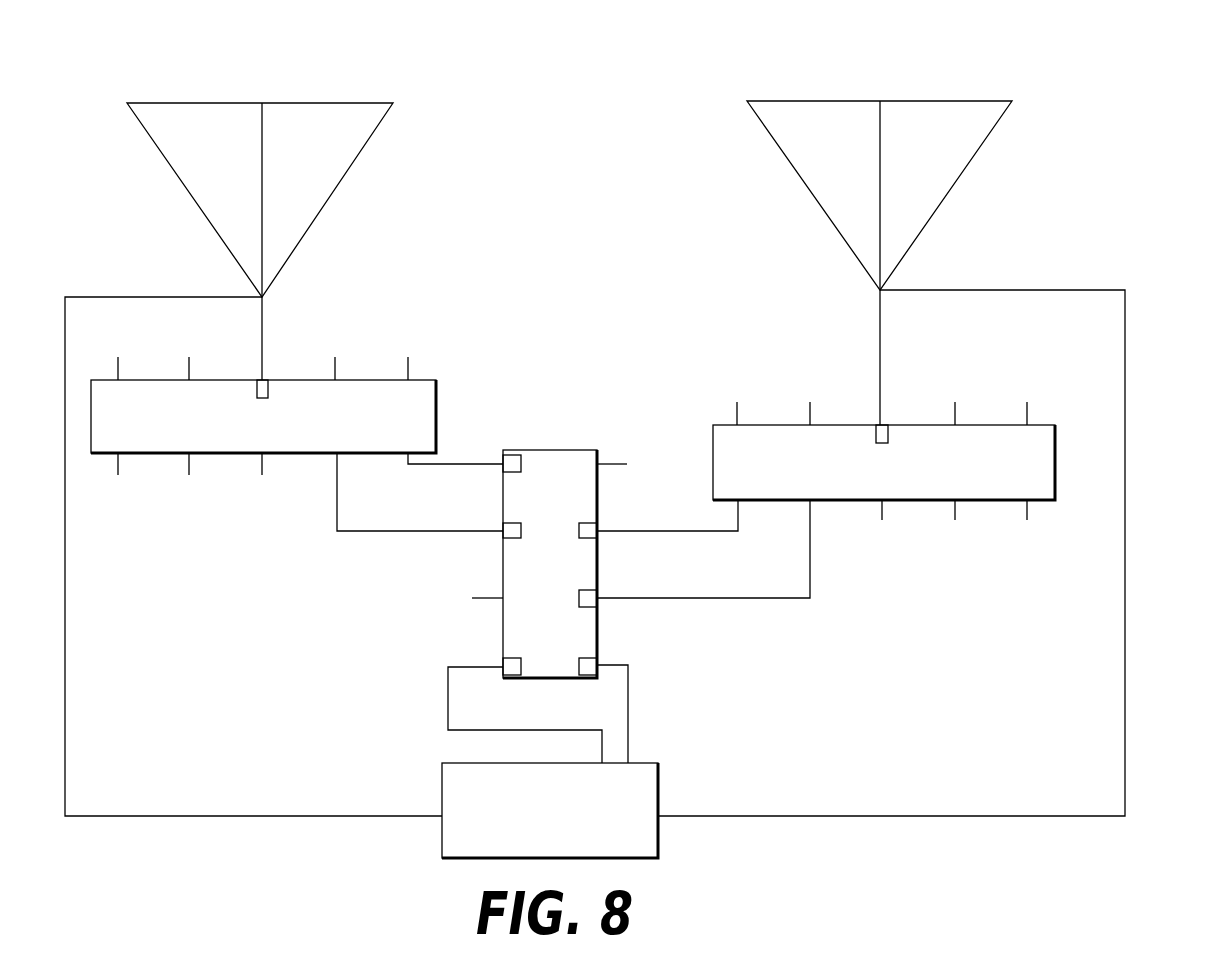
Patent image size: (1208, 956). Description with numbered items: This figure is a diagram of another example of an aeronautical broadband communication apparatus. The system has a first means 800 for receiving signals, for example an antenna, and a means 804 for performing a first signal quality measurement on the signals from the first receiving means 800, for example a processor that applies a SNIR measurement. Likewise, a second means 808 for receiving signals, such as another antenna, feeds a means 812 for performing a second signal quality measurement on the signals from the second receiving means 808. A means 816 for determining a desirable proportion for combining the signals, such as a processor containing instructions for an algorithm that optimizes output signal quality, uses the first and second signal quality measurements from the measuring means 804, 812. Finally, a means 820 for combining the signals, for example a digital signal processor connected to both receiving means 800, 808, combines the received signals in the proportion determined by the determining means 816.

The first means for receiving signals 800 is at (316, 103).
The second means for receiving signals 808 is at (938, 101).
The means for performing a first signal quality measurement 804 is at (437, 401).
The means for performing a second signal quality measurement 812 is at (1056, 449).
The means for determining a desirable proportion for combining the signals 816 is at (578, 450).
The means for combining the signals 820 is at (659, 777).